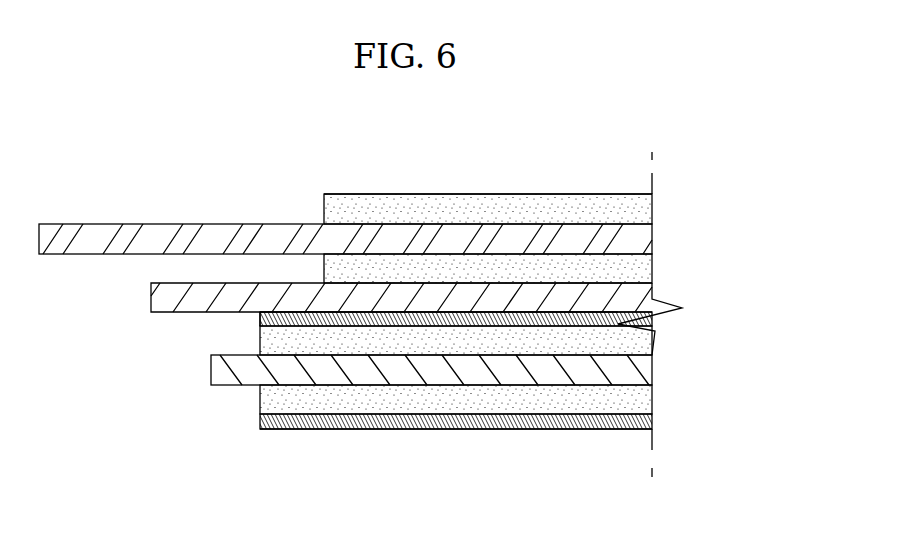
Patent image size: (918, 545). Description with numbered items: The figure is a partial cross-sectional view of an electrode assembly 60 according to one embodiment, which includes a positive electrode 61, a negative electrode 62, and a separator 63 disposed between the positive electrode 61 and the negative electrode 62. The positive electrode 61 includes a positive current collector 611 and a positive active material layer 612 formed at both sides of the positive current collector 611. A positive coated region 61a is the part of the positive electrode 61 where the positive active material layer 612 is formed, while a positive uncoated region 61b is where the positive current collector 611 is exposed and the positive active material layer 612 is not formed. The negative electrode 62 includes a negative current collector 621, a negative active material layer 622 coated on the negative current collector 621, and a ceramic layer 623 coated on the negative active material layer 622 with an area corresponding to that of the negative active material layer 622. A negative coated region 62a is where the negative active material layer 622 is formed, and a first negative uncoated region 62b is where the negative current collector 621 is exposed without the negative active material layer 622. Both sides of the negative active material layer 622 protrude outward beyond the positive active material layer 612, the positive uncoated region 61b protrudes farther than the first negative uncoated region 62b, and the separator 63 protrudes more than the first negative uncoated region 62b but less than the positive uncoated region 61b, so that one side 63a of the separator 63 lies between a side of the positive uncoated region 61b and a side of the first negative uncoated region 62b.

The electrode assembly 60 is at (603, 157).
The positive electrode 61 is at (345, 191).
The positive coated region 61a is at (383, 194).
The positive uncoated region 61b is at (178, 223).
The positive current collector 611 is at (345, 197).
The positive active material layer 612 is at (533, 210).
The negative electrode 62 is at (429, 425).
The negative coated region 62a is at (340, 430).
The first negative uncoated region 62b is at (222, 386).
The negative current collector 621 is at (429, 419).
The negative active material layer 622 is at (513, 402).
The ceramic layer 623 is at (566, 420).
The separator 63 is at (394, 310).
The one side of the separator 63a is at (150, 296).